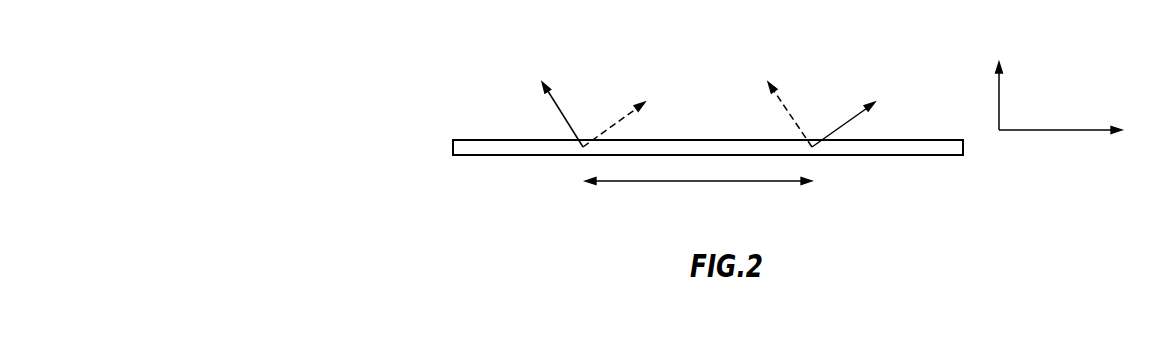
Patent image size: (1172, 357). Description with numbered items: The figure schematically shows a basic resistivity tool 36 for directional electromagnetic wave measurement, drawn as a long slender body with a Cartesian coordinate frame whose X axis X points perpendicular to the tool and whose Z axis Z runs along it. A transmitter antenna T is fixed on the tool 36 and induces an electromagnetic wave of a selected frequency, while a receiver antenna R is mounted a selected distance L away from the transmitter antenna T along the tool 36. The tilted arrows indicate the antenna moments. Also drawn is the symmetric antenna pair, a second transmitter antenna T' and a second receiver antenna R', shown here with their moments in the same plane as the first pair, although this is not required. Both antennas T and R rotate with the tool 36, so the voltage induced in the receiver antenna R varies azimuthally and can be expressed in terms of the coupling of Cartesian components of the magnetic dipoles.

The resistivity tool 36 is at (434, 102).
The transmitter antenna T is at (562, 105).
The symmetric transmitter antenna T' is at (626, 120).
The receiver antenna R is at (854, 118).
The symmetric receiver antenna R' is at (790, 104).
The selected distance L is at (698, 197).
The X axis X is at (999, 83).
The Z axis Z is at (1071, 133).